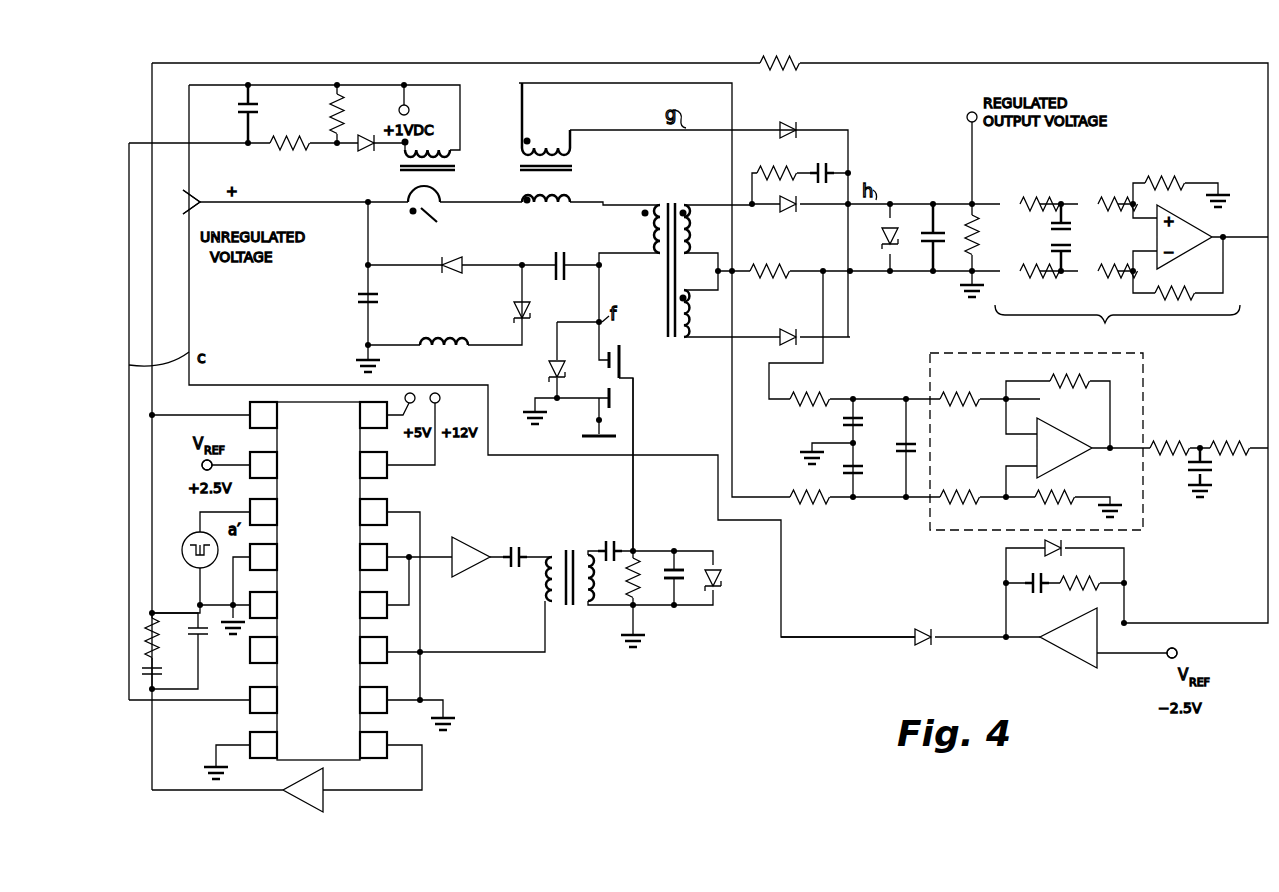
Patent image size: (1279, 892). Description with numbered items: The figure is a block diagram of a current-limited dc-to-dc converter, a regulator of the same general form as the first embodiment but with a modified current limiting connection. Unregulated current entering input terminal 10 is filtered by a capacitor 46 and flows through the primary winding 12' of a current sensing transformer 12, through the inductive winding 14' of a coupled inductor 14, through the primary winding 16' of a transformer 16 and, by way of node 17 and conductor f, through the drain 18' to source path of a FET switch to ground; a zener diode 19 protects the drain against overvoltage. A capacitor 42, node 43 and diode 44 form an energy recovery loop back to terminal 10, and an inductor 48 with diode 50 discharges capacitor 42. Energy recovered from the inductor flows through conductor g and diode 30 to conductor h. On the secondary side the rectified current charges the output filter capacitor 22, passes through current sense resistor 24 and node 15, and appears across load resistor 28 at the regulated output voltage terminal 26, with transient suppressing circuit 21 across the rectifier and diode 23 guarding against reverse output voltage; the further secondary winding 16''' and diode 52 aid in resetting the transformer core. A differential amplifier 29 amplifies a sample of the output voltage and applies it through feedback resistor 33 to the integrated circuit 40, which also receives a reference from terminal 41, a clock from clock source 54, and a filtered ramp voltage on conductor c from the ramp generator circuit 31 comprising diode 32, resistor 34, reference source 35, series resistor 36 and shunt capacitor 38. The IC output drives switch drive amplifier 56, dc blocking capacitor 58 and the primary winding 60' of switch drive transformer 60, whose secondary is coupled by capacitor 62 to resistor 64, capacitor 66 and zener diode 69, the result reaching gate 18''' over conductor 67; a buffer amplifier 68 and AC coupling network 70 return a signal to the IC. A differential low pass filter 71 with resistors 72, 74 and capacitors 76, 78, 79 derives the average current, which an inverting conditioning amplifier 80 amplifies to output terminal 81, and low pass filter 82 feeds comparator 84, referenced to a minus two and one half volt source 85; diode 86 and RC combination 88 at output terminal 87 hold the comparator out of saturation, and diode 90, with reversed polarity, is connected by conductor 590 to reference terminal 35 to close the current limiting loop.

The input terminal 10 is at (203, 199).
The current sensing transformer 12 is at (440, 179).
The primary winding 12' is at (430, 210).
The coupled inductor 14 is at (561, 173).
The inductive winding 14' is at (546, 207).
The node 15 is at (734, 275).
The transformer 16 is at (674, 255).
The primary winding 16' is at (637, 229).
The further secondary winding 16''' is at (708, 313).
The node 17 is at (602, 268).
The drain 18' is at (593, 369).
The gate 18''' is at (639, 361).
The zener diode 19 is at (548, 373).
The transient suppressing circuit 21 is at (760, 182).
The output filter capacitor 22 is at (946, 218).
The diode 23 is at (884, 232).
The current sense resistor 24 is at (768, 280).
The regulated output voltage terminal 26 is at (966, 116).
The load resistor 28 is at (988, 228).
The differential amplifier 29 is at (1117, 346).
The diode 30 is at (780, 125).
The ramp generator circuit 31 is at (334, 176).
The diode 32 is at (370, 152).
The feedback resistor 33 is at (768, 75).
The resistor 34 is at (349, 104).
The reference voltage source 35 is at (409, 110).
The series resistor 36 is at (290, 136).
The shunt capacitor 38 is at (230, 114).
The integrated circuit 40 is at (324, 488).
The terminal 41 is at (202, 465).
The capacitor 42 is at (560, 283).
The node 43 is at (522, 262).
The diode 44 is at (458, 258).
The capacitor 46 is at (379, 298).
The inductor 48 is at (446, 338).
The diode 50 is at (512, 310).
The diode 52 is at (792, 330).
The clock source 54 is at (186, 536).
The switch drive amplifier 56 is at (474, 528).
The dc blocking capacitor 58 is at (515, 545).
The switch drive transformer 60 is at (571, 592).
The primary winding 60' is at (532, 579).
The capacitor 62 is at (610, 540).
The resistor 64 is at (636, 578).
The capacitor 66 is at (680, 585).
The conductor 67 is at (634, 493).
The buffer amplifier 68 is at (324, 783).
The dc restoring zener diode 69 is at (720, 585).
The AC coupling network 70 is at (197, 672).
The differential low pass filter 71 is at (775, 440).
The resistor 72 is at (820, 504).
The resistor 74 is at (818, 392).
The capacitor 76 is at (904, 442).
The capacitor 78 is at (865, 470).
The capacitor 79 is at (842, 422).
The conditioning amplifier 80 is at (930, 360).
The output terminal 81 is at (1110, 446).
The low pass filter 82 is at (1253, 490).
The comparator 84 is at (1076, 660).
The reference voltage source 85 is at (1177, 652).
The diode 86 is at (1062, 555).
The output terminal 87 is at (1040, 637).
The series resistor-capacitor combination 88 is at (1037, 631).
The diode 90 is at (930, 628).
The conductor 590 is at (860, 633).